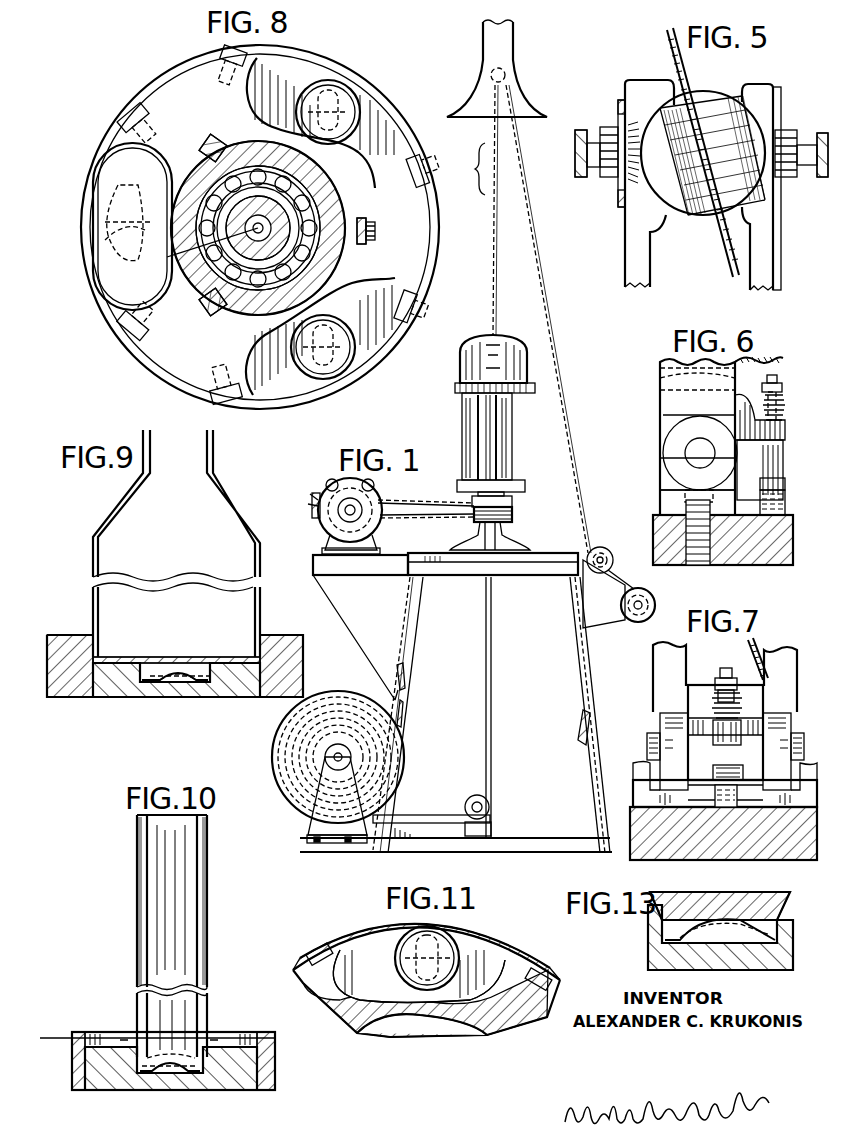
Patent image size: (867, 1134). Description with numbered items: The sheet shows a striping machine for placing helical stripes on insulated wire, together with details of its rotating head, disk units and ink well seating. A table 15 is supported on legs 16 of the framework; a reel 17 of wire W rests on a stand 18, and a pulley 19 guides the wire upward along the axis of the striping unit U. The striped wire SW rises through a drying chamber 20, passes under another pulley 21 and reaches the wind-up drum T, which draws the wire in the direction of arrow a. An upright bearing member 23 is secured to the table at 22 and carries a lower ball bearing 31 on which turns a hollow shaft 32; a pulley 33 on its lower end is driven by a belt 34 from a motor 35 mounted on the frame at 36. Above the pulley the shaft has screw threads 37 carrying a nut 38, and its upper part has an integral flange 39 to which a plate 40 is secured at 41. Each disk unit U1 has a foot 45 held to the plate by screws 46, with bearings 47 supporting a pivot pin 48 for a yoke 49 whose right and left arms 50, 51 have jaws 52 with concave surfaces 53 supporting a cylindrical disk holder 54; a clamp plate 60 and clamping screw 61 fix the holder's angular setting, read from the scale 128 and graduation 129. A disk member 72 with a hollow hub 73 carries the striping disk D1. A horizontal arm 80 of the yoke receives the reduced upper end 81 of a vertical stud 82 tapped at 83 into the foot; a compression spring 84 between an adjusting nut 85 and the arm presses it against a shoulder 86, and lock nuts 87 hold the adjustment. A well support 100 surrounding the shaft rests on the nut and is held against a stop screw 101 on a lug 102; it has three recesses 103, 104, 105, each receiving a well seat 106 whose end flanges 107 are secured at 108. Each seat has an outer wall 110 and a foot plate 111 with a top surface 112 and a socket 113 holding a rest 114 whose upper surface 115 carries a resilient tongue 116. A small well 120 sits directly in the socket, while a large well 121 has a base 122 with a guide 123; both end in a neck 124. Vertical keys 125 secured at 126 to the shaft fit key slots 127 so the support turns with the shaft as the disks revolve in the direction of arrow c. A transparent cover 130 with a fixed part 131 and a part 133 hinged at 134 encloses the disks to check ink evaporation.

In FIG. 1, the table 15 is at (543, 557).
In FIG. 1, the legs 16 is at (403, 660).
In FIG. 1, the reel 17 is at (287, 793).
In FIG. 1, the stand 18 is at (315, 828).
In FIG. 1, the pulley 19 is at (465, 803).
In FIG. 1, the drying chamber 20 is at (502, 53).
In FIG. 1, the pulley 21 is at (601, 548).
In FIG. 1, the securing point 22 is at (453, 546).
In FIG. 8, the bearing member 23 is at (256, 225).
In FIG. 1, the bearing member 23 is at (497, 543).
In FIG. 8, the lower ball bearing 31 is at (183, 272).
In FIG. 8, the hollow shaft 32 is at (330, 257).
In FIG. 11, the hollow shaft 32 is at (403, 1023).
In FIG. 1, the hollow shaft 32 is at (493, 430).
In FIG. 1, the pulley 33 is at (512, 513).
In FIG. 1, the belt 34 is at (397, 500).
In FIG. 1, the motor 35 is at (357, 527).
In FIG. 1, the motor mounting 36 is at (337, 565).
In FIG. 1, the screw threads 37 is at (512, 500).
In FIG. 1, the nut 38 is at (477, 497).
In FIG. 1, the flange 39 is at (462, 397).
In FIG. 6, the plate 40 is at (777, 530).
In FIG. 7, the plate 40 is at (772, 843).
In FIG. 1, the plate 40 is at (512, 390).
In FIG. 1, the plate fastening 41 is at (484, 398).
In FIG. 6, the foot 45 is at (672, 510).
In FIG. 7, the foot 45 is at (797, 793).
In FIG. 6, the screws 46 is at (705, 548).
In FIG. 6, the bearings 47 is at (682, 437).
In FIG. 7, the bearings 47 is at (670, 715).
In FIG. 6, the pivot pin 48 is at (702, 453).
In FIG. 7, the pivot pin 48 is at (650, 735).
In FIG. 5, the yoke 49 is at (760, 277).
In FIG. 6, the yoke 49 is at (673, 387).
In FIG. 7, the yoke 49 is at (795, 687).
In FIG. 5, the right arm 50 is at (763, 250).
In FIG. 7, the right arm 50 is at (793, 663).
In FIG. 5, the left arm 51 is at (640, 258).
In FIG. 6, the left arm 51 is at (667, 362).
In FIG. 7, the left arm 51 is at (663, 680).
In FIG. 5, the jaw 52 is at (767, 110).
In FIG. 5, the parti-cylindrical surface 53 is at (747, 127).
In FIG. 5, the disk holder 54 is at (733, 113).
In FIG. 5, the clamp plate 60 is at (610, 127).
In FIG. 5, the clamping screw 61 is at (581, 130).
In FIG. 5, the disk member 72 is at (690, 100).
In FIG. 5, the hollow hub 73 is at (697, 220).
In FIG. 6, the horizontal arm 80 is at (780, 427).
In FIG. 7, the horizontal arm 80 is at (702, 720).
In FIG. 6, the reduced upper end 81 is at (770, 378).
In FIG. 7, the reduced upper end 81 is at (722, 668).
In FIG. 6, the vertical stud 82 is at (782, 478).
In FIG. 7, the vertical stud 82 is at (717, 772).
In FIG. 6, the tapped connection 83 is at (785, 502).
In FIG. 7, the tapped connection 83 is at (725, 808).
In FIG. 6, the compression spring 84 is at (782, 405).
In FIG. 7, the compression spring 84 is at (733, 712).
In FIG. 6, the adjusting nut 85 is at (780, 387).
In FIG. 7, the adjusting nut 85 is at (737, 683).
In FIG. 6, the shoulder 86 is at (760, 470).
In FIG. 7, the shoulder 86 is at (713, 725).
In FIG. 6, the lock nuts 87 is at (763, 493).
In FIG. 7, the lock nuts 87 is at (713, 787).
In FIG. 8, the well support 100 is at (173, 80).
In FIG. 9, the well support 100 is at (277, 638).
In FIG. 10, the well support 100 is at (260, 1040).
In FIG. 11, the well support 100 is at (525, 1013).
In FIG. 1, the well support 100 is at (475, 483).
In FIG. 8, the stop screw 101 is at (366, 230).
In FIG. 8, the lug 102 is at (368, 243).
In FIG. 8, the recess 103 is at (368, 283).
In FIG. 8, the recess 104 is at (162, 170).
In FIG. 9, the recess 104 is at (98, 647).
In FIG. 8, the recess 105 is at (383, 168).
In FIG. 8, the well seat 106 is at (367, 110).
In FIG. 9, the well seat 106 is at (113, 687).
In FIG. 10, the well seat 106 is at (100, 1077).
In FIG. 11, the well seat 106 is at (497, 960).
In FIG. 13, the well seat 106 is at (660, 958).
In FIG. 1, the well seat 106 is at (503, 485).
In FIG. 8, the end flanges 107 is at (315, 60).
In FIG. 11, the end flanges 107 is at (350, 930).
In FIG. 8, the seat fastening 108 is at (130, 120).
In FIG. 9, the seat fastening 108 is at (258, 697).
In FIG. 11, the seat fastening 108 is at (320, 945).
In FIG. 8, the outer wall 110 is at (368, 92).
In FIG. 10, the outer wall 110 is at (108, 1043).
In FIG. 11, the outer wall 110 is at (500, 935).
In FIG. 9, the foot plate 111 is at (213, 687).
In FIG. 10, the foot plate 111 is at (227, 1080).
In FIG. 8, the top surface 112 is at (377, 125).
In FIG. 9, the top surface 112 is at (237, 658).
In FIG. 10, the top surface 112 is at (230, 1043).
In FIG. 11, the top surface 112 is at (382, 990).
In FIG. 9, the socket 113 is at (168, 682).
In FIG. 10, the socket 113 is at (153, 1072).
In FIG. 9, the rest 114 is at (160, 680).
In FIG. 10, the rest 114 is at (165, 1072).
In FIG. 13, the rest 114 is at (677, 932).
In FIG. 9, the upper surface 115 is at (158, 668).
In FIG. 10, the upper surface 115 is at (157, 1057).
In FIG. 13, the upper surface 115 is at (777, 917).
In FIG. 8, the resilient tongue 116 is at (313, 102).
In FIG. 9, the resilient tongue 116 is at (183, 684).
In FIG. 10, the resilient tongue 116 is at (173, 1072).
In FIG. 11, the resilient tongue 116 is at (460, 960).
In FIG. 13, the resilient tongue 116 is at (750, 972).
In FIG. 8, the small ink well 120 is at (335, 83).
In FIG. 10, the small ink well 120 is at (138, 912).
In FIG. 11, the small ink well 120 is at (395, 975).
In FIG. 1, the small ink well 120 is at (508, 445).
In FIG. 8, the large ink well 121 is at (107, 158).
In FIG. 9, the large ink well 121 is at (130, 492).
In FIG. 1, the large ink well 121 is at (463, 437).
In FIG. 9, the base 122 is at (93, 627).
In FIG. 9, the guide 123 is at (182, 668).
In FIG. 13, the guide 123 is at (777, 895).
In FIG. 9, the neck 124 is at (208, 460).
In FIG. 8, the vertical keys 125 is at (210, 140).
In FIG. 8, the key fastening 126 is at (204, 144).
In FIG. 8, the key slots 127 is at (210, 155).
In FIG. 5, the scale 128 is at (633, 127).
In FIG. 5, the graduation 129 is at (657, 167).
In FIG. 1, the cover 130 is at (462, 367).
In FIG. 1, the cover part 131 is at (477, 343).
In FIG. 1, the hinged cover part 133 is at (523, 362).
In FIG. 1, the hinge 134 is at (494, 347).
In FIG. 8, the striping unit U is at (337, 202).
In FIG. 1, the striping unit U is at (463, 422).
In FIG. 5, the disk unit U1 is at (760, 103).
In FIG. 6, the disk unit U1 is at (673, 403).
In FIG. 7, the disk unit U1 is at (663, 653).
In FIG. 8, the wire W is at (200, 253).
In FIG. 1, the wire W is at (486, 757).
In FIG. 1, the striped wire SW is at (493, 277).
In FIG. 5, the striping disk D1 is at (670, 47).
In FIG. 6, the striping disk D1 is at (745, 357).
In FIG. 7, the striping disk D1 is at (766, 650).
In FIG. 1, the wind-up drum T is at (623, 607).
In FIG. 1, the feed direction arrow a is at (487, 215).
In FIG. 8, the rotation direction arrow c is at (113, 352).